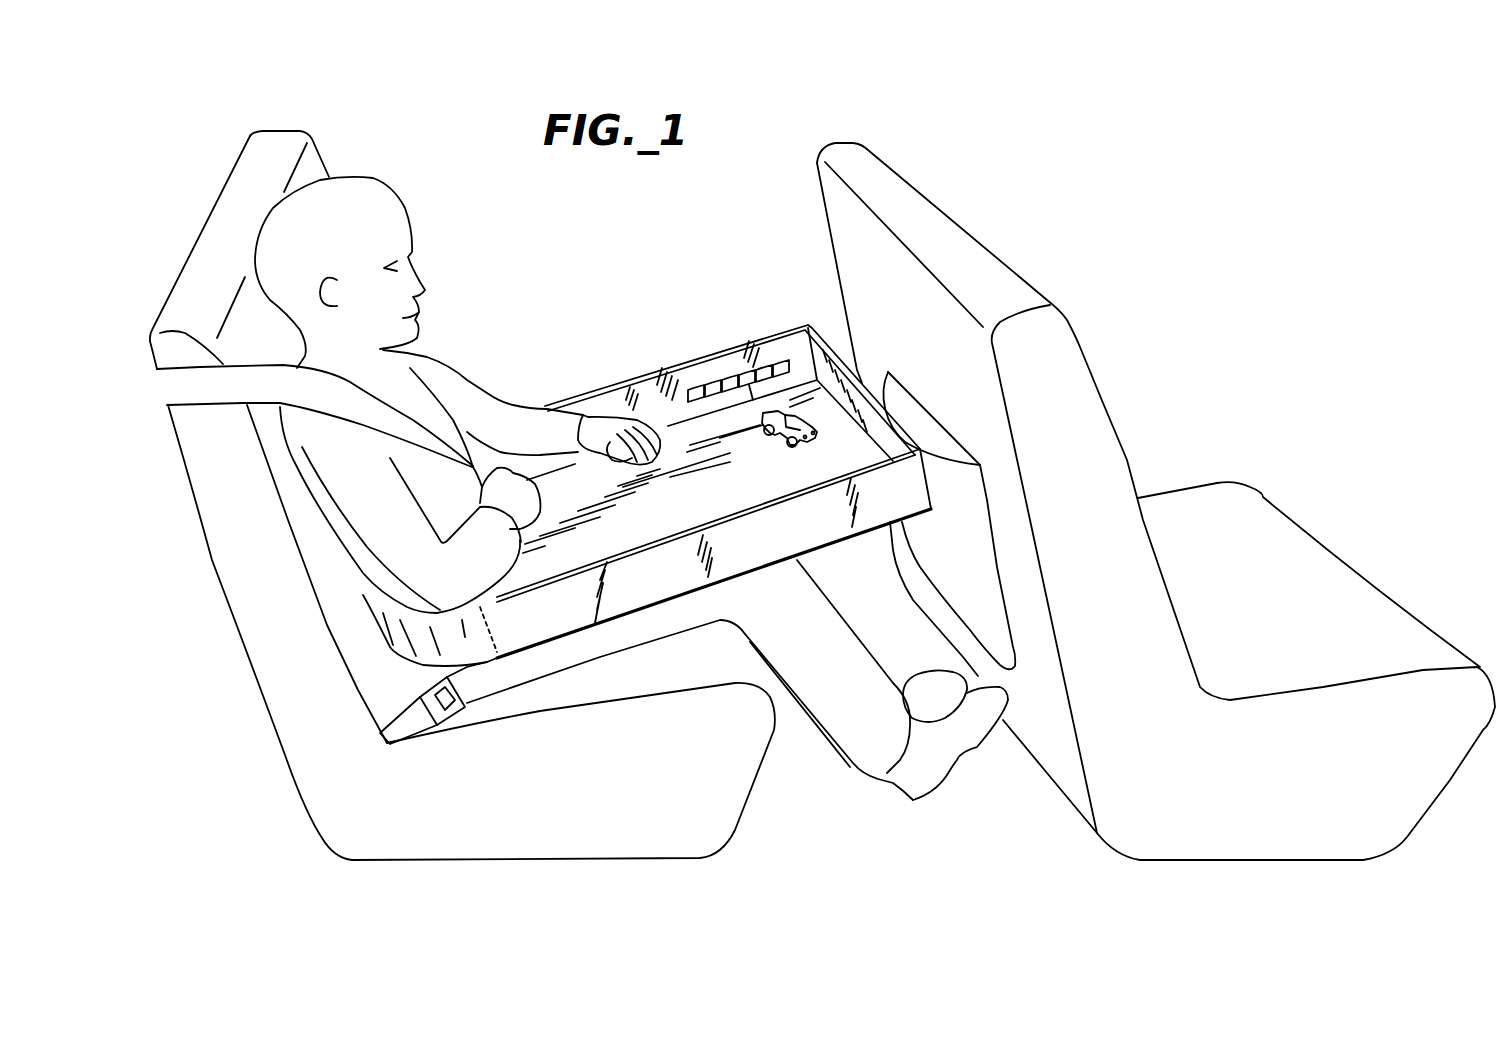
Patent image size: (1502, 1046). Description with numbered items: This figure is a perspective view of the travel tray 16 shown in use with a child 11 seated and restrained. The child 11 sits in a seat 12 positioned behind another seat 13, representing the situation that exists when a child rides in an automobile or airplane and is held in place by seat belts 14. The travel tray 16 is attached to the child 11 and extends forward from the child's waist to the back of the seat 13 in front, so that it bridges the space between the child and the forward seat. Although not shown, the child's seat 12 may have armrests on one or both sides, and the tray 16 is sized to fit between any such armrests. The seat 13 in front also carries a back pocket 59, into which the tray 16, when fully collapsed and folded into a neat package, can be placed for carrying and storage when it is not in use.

The child 11 is at (485, 345).
The seat 12 is at (278, 680).
The seat 13 is at (1060, 362).
The seat belts 14 is at (420, 725).
The travel tray 16 is at (713, 357).
The pocket 59 is at (970, 553).